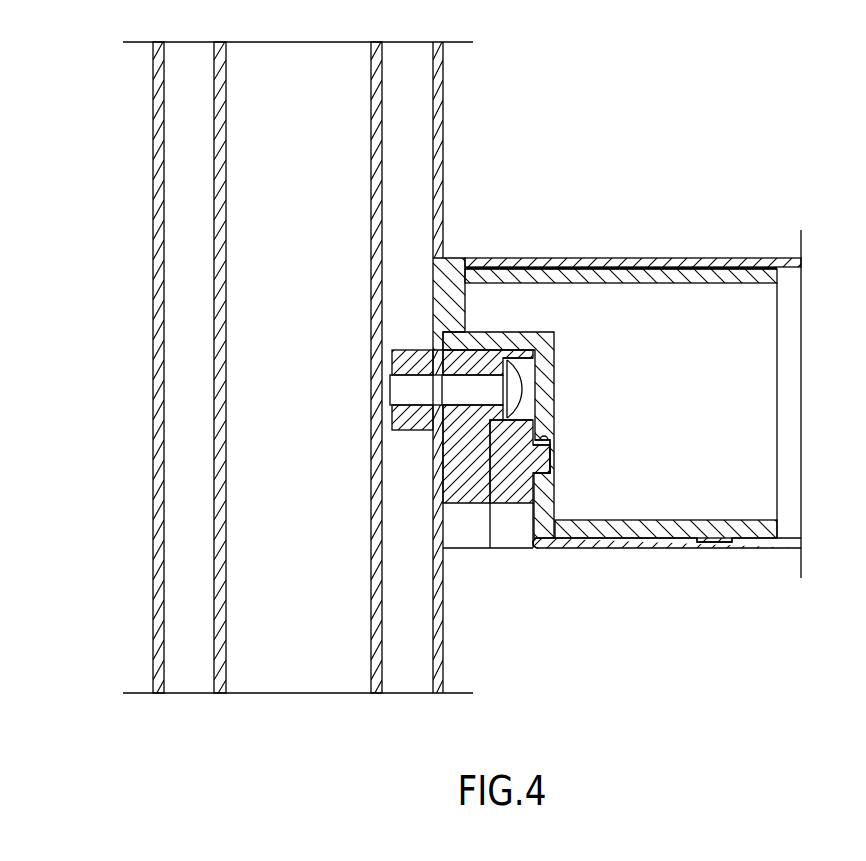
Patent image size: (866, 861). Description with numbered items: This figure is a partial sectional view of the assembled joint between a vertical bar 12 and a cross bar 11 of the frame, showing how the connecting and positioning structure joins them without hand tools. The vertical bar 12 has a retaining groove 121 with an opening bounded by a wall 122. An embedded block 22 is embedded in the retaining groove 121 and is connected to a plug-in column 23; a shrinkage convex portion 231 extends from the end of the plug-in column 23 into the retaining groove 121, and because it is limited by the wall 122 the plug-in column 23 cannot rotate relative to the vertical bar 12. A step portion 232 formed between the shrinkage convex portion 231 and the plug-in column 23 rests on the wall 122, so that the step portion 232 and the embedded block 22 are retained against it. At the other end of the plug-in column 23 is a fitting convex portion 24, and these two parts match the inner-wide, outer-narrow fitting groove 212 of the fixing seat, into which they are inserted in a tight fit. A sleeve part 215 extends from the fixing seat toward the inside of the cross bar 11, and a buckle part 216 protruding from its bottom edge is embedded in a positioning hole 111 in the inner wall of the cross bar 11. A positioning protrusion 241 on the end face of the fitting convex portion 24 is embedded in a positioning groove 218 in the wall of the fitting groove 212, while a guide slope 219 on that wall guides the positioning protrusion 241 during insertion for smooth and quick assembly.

The cross bar 11 is at (593, 262).
The positioning hole 111 is at (727, 548).
The vertical bar 12 is at (150, 196).
The retaining groove 121 is at (442, 263).
The wall of the opening of the retaining groove 122 is at (438, 443).
The fitting groove 212 is at (497, 357).
The sleeve part 215 is at (676, 277).
The buckle part 216 is at (720, 544).
The positioning groove 218 is at (548, 438).
The guide slope 219 is at (532, 548).
The embedded block 22 is at (408, 418).
The plug-in column 23 is at (473, 487).
The shrinkage convex portion 231 is at (428, 356).
The step portion 232 is at (432, 433).
The fitting convex portion 24 is at (510, 487).
The positioning protrusion 241 is at (545, 462).